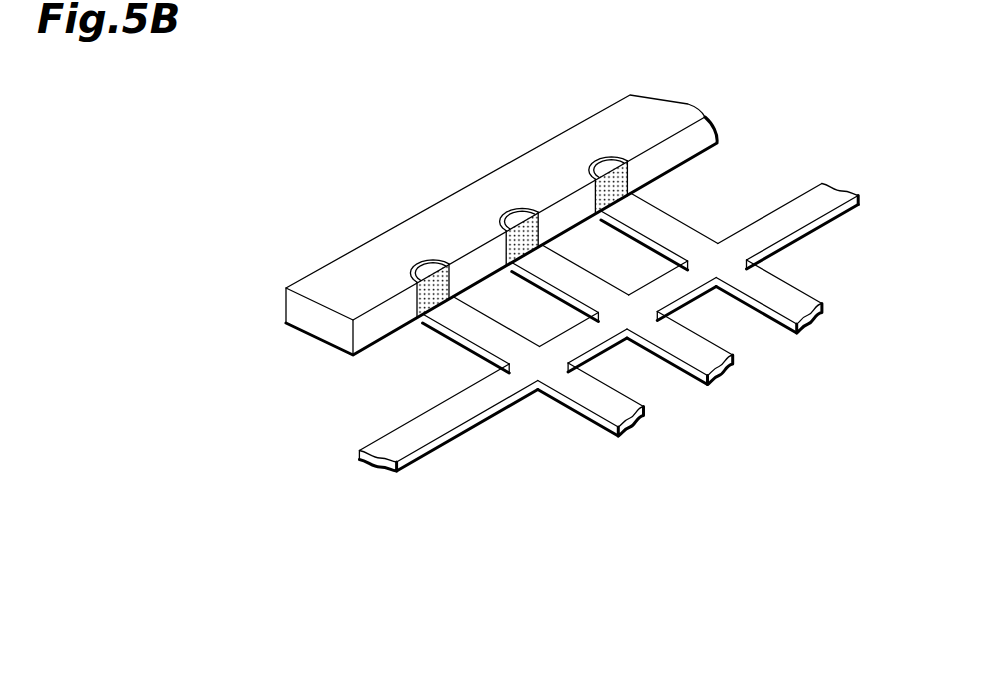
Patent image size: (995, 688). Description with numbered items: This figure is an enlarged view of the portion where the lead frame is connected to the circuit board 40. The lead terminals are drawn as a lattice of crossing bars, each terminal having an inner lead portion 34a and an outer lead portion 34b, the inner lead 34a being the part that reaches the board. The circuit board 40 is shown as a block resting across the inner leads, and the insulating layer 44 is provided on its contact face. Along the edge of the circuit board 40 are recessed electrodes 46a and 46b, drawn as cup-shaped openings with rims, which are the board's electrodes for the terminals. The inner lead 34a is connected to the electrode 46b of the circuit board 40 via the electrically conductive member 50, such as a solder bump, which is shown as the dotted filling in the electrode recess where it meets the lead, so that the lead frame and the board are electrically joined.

The inner lead portion 34a is at (463, 346).
The outer lead portion 34b is at (587, 417).
The circuit board 40 is at (315, 318).
The insulating layer 44 is at (335, 348).
The electrode 46a is at (522, 216).
The electrode 46b is at (441, 263).
The electrically conductive member 50 is at (432, 283).